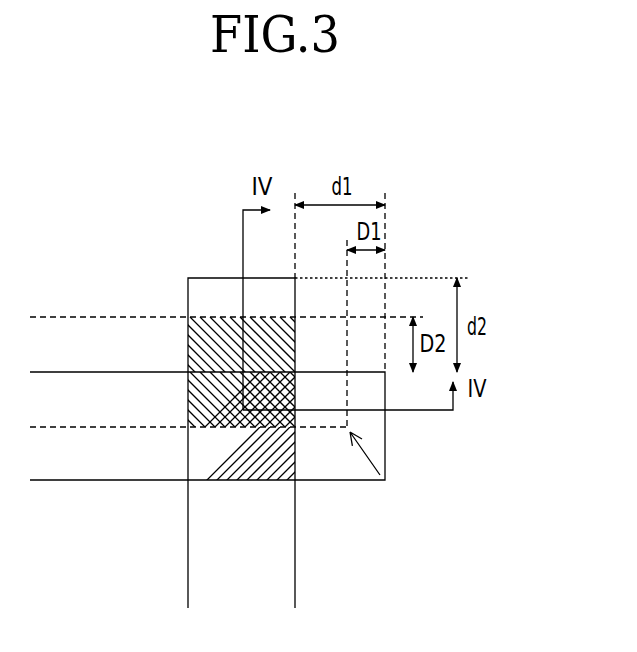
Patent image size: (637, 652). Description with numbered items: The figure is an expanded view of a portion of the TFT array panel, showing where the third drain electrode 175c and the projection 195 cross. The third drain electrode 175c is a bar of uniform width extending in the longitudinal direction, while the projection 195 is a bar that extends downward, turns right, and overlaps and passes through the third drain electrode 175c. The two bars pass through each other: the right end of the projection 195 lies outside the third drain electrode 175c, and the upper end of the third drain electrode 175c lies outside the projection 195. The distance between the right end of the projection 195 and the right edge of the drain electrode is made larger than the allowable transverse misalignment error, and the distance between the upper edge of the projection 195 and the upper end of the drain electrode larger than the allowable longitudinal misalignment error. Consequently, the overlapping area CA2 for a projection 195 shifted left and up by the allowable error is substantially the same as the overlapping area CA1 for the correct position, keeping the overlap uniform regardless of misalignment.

The third drain electrode 175c is at (188, 548).
The projection 195 is at (343, 481).
The overlapping area CA1 is at (205, 452).
The overlapping area CA2 is at (221, 327).